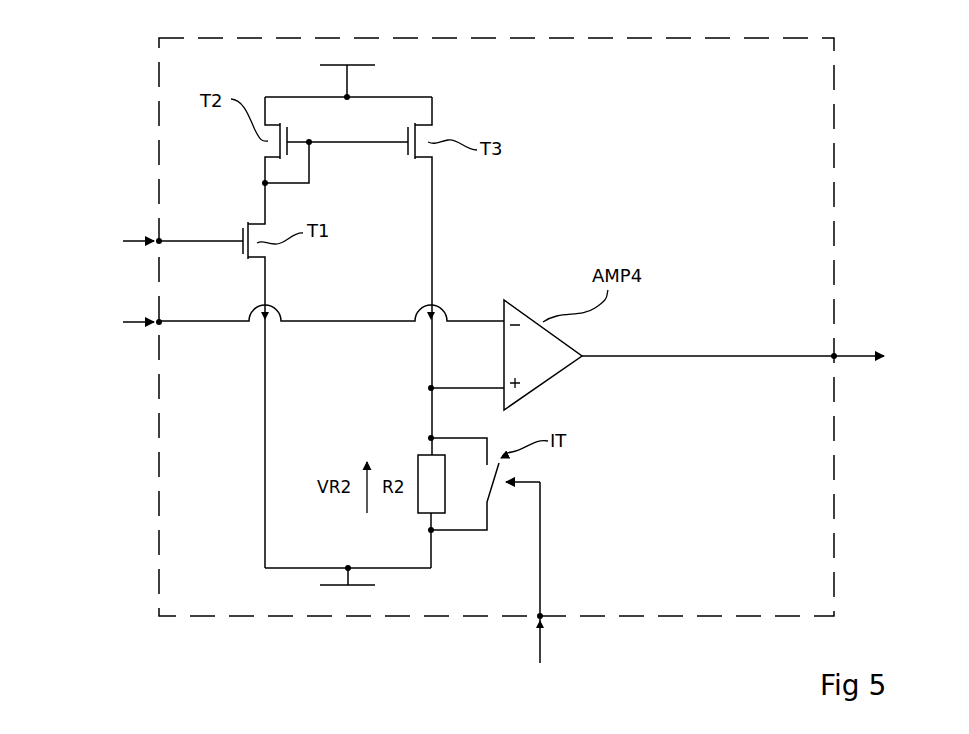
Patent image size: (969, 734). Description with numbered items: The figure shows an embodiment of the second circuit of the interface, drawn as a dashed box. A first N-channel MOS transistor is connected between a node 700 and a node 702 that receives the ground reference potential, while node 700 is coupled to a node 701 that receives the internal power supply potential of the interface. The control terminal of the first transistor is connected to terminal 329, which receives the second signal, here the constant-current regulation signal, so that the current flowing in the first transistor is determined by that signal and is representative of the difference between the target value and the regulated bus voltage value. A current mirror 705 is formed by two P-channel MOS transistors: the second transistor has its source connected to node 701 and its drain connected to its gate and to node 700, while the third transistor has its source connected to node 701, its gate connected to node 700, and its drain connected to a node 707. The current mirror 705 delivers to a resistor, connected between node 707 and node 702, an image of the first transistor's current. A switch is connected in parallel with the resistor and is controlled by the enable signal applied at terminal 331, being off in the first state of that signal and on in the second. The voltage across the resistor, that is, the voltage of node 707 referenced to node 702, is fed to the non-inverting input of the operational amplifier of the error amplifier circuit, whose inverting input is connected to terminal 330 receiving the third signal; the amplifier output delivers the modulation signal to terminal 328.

The terminal 328 is at (833, 354).
The terminal 329 is at (161, 241).
The terminal 330 is at (161, 322).
The terminal 331 is at (543, 615).
The node 700 is at (262, 182).
The node 701 is at (349, 96).
The node 702 is at (346, 569).
The current mirror 705 is at (456, 124).
The node 707 is at (430, 388).